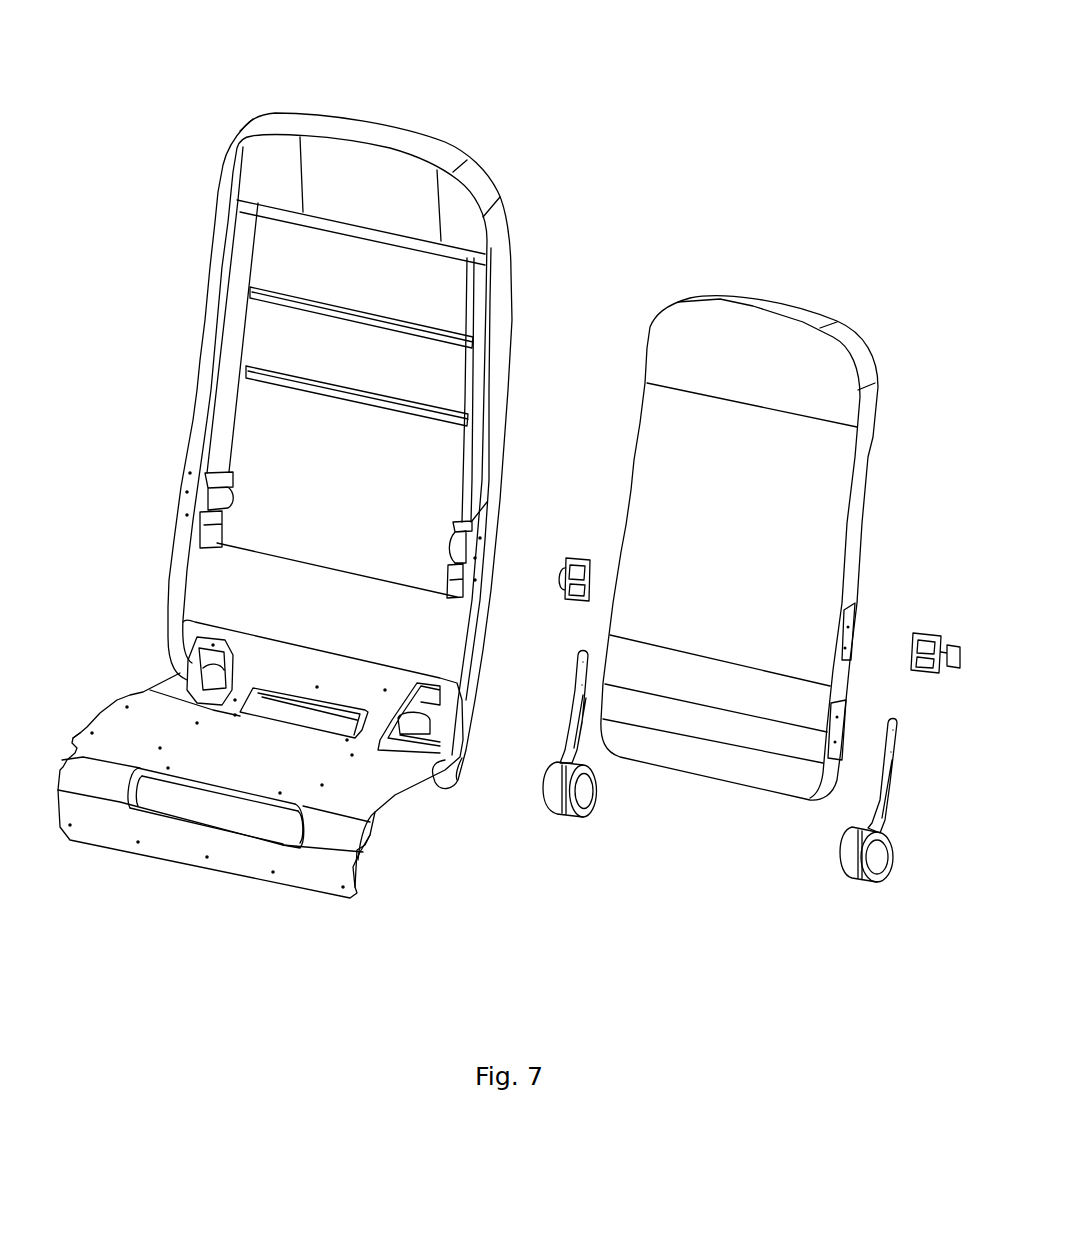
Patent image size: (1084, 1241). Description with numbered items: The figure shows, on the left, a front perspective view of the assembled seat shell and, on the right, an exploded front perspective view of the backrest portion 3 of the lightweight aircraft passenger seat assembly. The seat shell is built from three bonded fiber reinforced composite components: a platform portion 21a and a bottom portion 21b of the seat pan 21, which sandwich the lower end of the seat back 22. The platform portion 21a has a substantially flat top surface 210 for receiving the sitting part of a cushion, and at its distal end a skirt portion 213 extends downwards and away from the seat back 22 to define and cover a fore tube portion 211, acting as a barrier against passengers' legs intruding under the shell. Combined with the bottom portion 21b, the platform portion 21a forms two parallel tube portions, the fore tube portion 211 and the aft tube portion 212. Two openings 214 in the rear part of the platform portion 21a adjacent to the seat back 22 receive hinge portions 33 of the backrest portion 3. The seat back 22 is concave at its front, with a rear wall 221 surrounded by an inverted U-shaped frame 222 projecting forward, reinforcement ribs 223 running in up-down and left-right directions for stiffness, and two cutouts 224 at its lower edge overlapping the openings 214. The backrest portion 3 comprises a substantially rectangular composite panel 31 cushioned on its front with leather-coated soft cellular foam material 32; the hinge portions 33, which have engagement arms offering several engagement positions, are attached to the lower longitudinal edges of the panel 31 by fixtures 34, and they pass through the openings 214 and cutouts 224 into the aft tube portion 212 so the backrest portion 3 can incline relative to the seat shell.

The seat back 22 is at (465, 118).
The frame 222 is at (212, 278).
The rear wall 221 is at (381, 371).
The reinforcement ribs 223 is at (262, 387).
The openings 214 is at (177, 677).
The cutouts 224 is at (380, 743).
The seat pan 21 is at (237, 993).
The platform portion 21a is at (112, 720).
The top surface 210 is at (222, 757).
The aft tube portion 212 is at (463, 780).
The bottom portion 21b is at (373, 823).
The fore tube portion 211 is at (386, 880).
The skirt portion 213 is at (225, 860).
The backrest portion 3 is at (782, 277).
The panel 31 is at (863, 515).
The soft cellular foam material 32 is at (715, 565).
The hinge portions 33 is at (567, 810).
The fixtures 34 is at (575, 598).